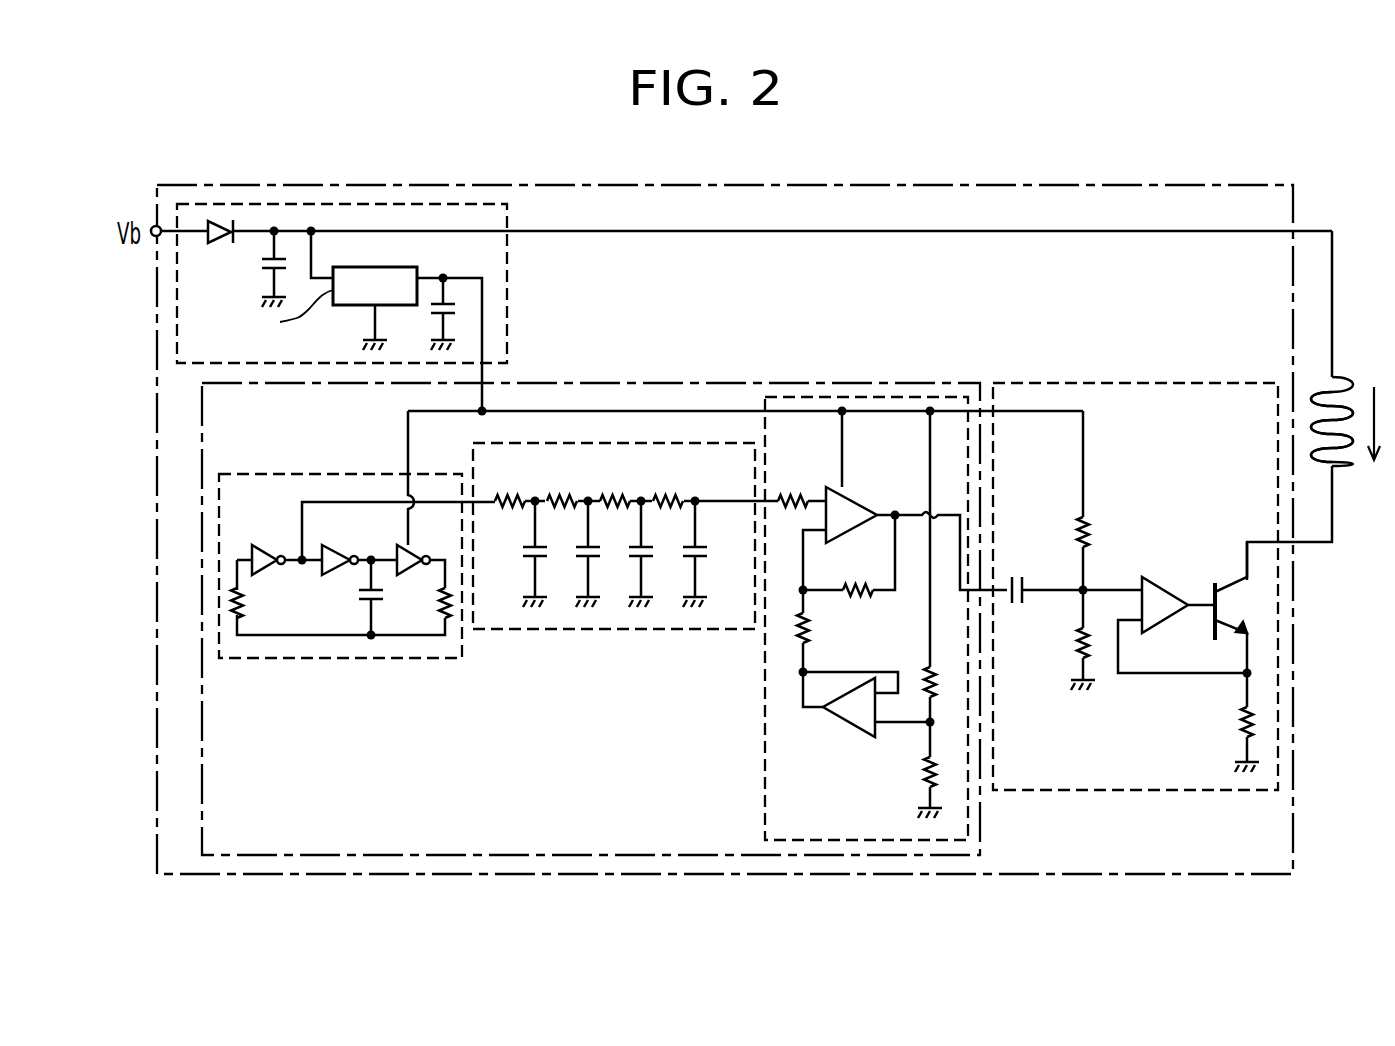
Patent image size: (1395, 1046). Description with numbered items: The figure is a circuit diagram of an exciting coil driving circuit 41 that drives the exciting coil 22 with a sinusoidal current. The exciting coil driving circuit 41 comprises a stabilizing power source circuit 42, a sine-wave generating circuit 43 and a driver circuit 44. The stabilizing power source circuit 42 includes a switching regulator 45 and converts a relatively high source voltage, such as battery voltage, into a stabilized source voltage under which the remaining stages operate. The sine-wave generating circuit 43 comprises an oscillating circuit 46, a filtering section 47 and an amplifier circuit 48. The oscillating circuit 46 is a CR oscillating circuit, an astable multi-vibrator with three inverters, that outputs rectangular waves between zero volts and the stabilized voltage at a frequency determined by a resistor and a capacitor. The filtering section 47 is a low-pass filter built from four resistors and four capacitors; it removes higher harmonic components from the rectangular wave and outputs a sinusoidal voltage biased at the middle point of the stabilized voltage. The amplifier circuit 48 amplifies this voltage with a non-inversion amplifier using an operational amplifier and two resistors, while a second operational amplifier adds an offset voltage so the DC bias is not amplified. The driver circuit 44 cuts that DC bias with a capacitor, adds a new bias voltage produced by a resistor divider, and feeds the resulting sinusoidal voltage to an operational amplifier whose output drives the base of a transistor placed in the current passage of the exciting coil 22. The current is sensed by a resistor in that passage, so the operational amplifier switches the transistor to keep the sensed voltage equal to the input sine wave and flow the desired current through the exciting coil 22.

The exciting coil 22 is at (1356, 382).
The exciting coil driving circuit 41 is at (1208, 185).
The stabilizing power source circuit 42 is at (378, 307).
The sine-wave generating circuit 43 is at (656, 383).
The driver circuit 44 is at (1218, 383).
The switching regulator 45 is at (448, 292).
The oscillating circuit 46 is at (352, 658).
The filtering section 47 is at (572, 629).
The amplifier circuit 48 is at (765, 774).